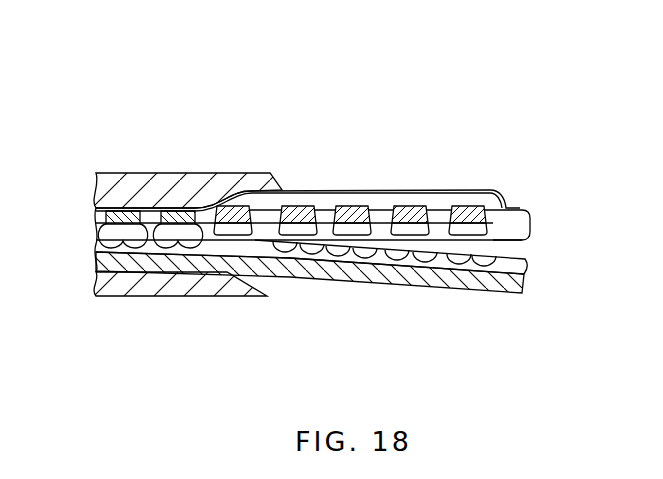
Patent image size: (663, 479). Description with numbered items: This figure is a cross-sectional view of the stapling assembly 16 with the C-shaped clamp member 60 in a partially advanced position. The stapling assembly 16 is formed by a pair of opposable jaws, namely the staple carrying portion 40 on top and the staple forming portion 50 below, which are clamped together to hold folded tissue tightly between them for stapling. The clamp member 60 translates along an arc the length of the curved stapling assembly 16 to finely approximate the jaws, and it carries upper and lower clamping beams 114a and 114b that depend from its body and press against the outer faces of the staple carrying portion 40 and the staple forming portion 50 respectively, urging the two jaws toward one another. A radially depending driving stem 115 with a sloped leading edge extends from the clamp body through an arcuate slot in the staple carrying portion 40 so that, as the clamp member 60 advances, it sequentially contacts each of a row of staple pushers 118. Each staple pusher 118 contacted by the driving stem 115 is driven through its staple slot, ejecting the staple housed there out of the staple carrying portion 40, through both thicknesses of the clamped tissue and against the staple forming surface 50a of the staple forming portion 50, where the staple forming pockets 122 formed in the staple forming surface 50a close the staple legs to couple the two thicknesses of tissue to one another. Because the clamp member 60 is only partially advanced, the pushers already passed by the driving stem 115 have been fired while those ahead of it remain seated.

The stapling assembly 16 is at (487, 164).
The staple carrying portion 40 is at (495, 186).
The staple forming portion 50 is at (500, 290).
The staple forming surface 50a is at (523, 262).
The clamp member 60 is at (115, 173).
The upper clamping beam 114a is at (250, 173).
The lower clamping beam 114b is at (197, 296).
The driving stem 115 is at (190, 207).
The staple pushers 118 is at (358, 206).
The staple forming pockets 122 is at (318, 256).